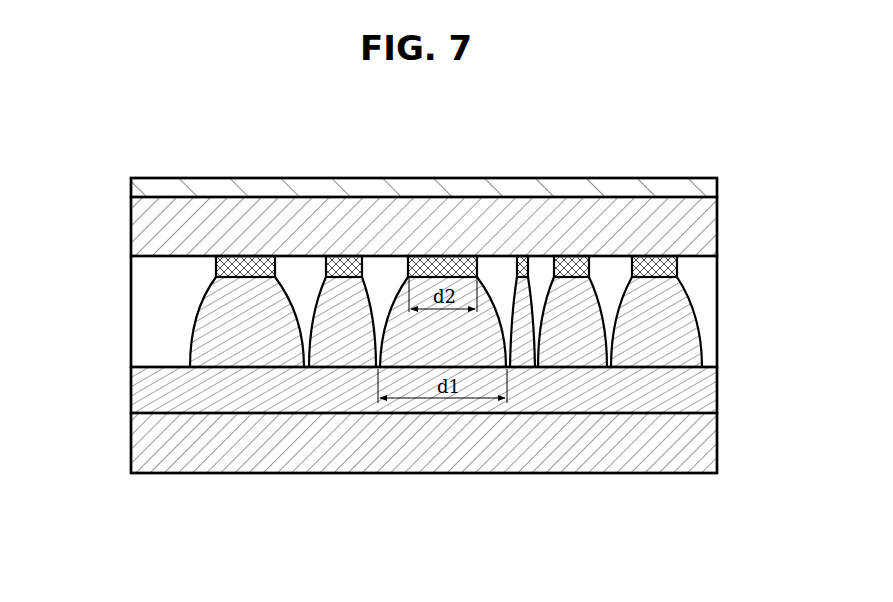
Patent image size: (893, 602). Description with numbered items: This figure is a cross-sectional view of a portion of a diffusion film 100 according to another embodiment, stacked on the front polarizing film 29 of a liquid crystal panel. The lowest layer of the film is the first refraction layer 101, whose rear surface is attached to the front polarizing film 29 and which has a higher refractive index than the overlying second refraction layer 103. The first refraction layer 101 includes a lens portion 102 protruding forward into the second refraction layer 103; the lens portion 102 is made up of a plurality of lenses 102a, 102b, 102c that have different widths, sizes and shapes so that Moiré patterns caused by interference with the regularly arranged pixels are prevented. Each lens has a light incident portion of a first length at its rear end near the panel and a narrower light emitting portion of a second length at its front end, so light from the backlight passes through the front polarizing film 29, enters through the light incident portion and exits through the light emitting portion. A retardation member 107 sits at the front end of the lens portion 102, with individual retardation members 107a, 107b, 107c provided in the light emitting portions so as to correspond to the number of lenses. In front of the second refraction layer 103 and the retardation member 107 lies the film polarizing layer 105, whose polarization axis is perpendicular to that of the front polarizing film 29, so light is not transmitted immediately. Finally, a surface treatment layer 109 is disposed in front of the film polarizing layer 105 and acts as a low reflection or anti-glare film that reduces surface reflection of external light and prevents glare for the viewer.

The diffusion film 100 is at (117, 321).
The surface treatment layer 109 is at (682, 188).
The film polarizing layer 105 is at (718, 233).
The second refraction layer 103 is at (707, 318).
The first refraction layer 101 is at (710, 395).
The front polarizing film 29 is at (708, 447).
The lens portion 102 is at (446, 205).
The lens 102a is at (619, 296).
The lens 102b is at (546, 294).
The lens 102c is at (508, 294).
The retardation member 107 is at (446, 356).
The first pillar 107a is at (661, 278).
The second pillar 107b is at (567, 278).
The third pillar 107c is at (437, 265).